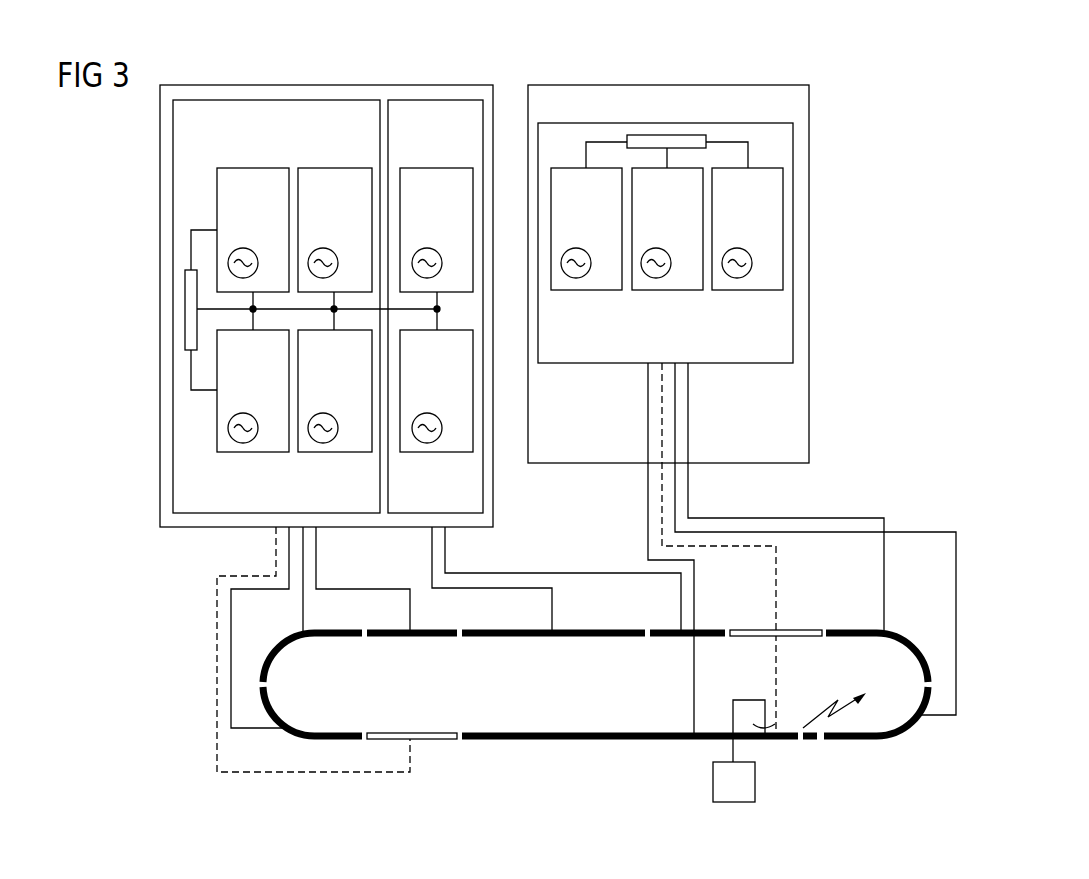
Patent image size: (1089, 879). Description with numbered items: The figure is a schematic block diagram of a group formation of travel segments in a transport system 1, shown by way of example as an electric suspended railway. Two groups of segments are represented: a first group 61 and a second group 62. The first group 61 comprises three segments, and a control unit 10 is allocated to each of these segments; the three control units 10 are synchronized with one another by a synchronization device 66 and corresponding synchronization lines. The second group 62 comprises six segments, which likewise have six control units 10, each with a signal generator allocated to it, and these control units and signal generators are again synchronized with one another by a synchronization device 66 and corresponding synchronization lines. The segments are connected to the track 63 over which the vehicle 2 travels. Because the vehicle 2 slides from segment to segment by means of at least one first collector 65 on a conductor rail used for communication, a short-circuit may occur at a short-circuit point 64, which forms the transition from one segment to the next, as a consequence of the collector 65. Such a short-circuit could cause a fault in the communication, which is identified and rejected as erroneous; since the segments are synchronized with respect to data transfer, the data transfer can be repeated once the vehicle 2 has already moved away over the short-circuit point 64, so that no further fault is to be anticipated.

The transport system 1 is at (883, 104).
The vehicle 2 is at (755, 783).
The control unit 10 is at (254, 168).
The first group 61 is at (810, 175).
The second group 62 is at (160, 176).
The track / stator segments 63 is at (994, 624).
The short-circuit point 64 is at (834, 754).
The first collector 65 is at (770, 728).
The synchronization device 66 is at (185, 305).